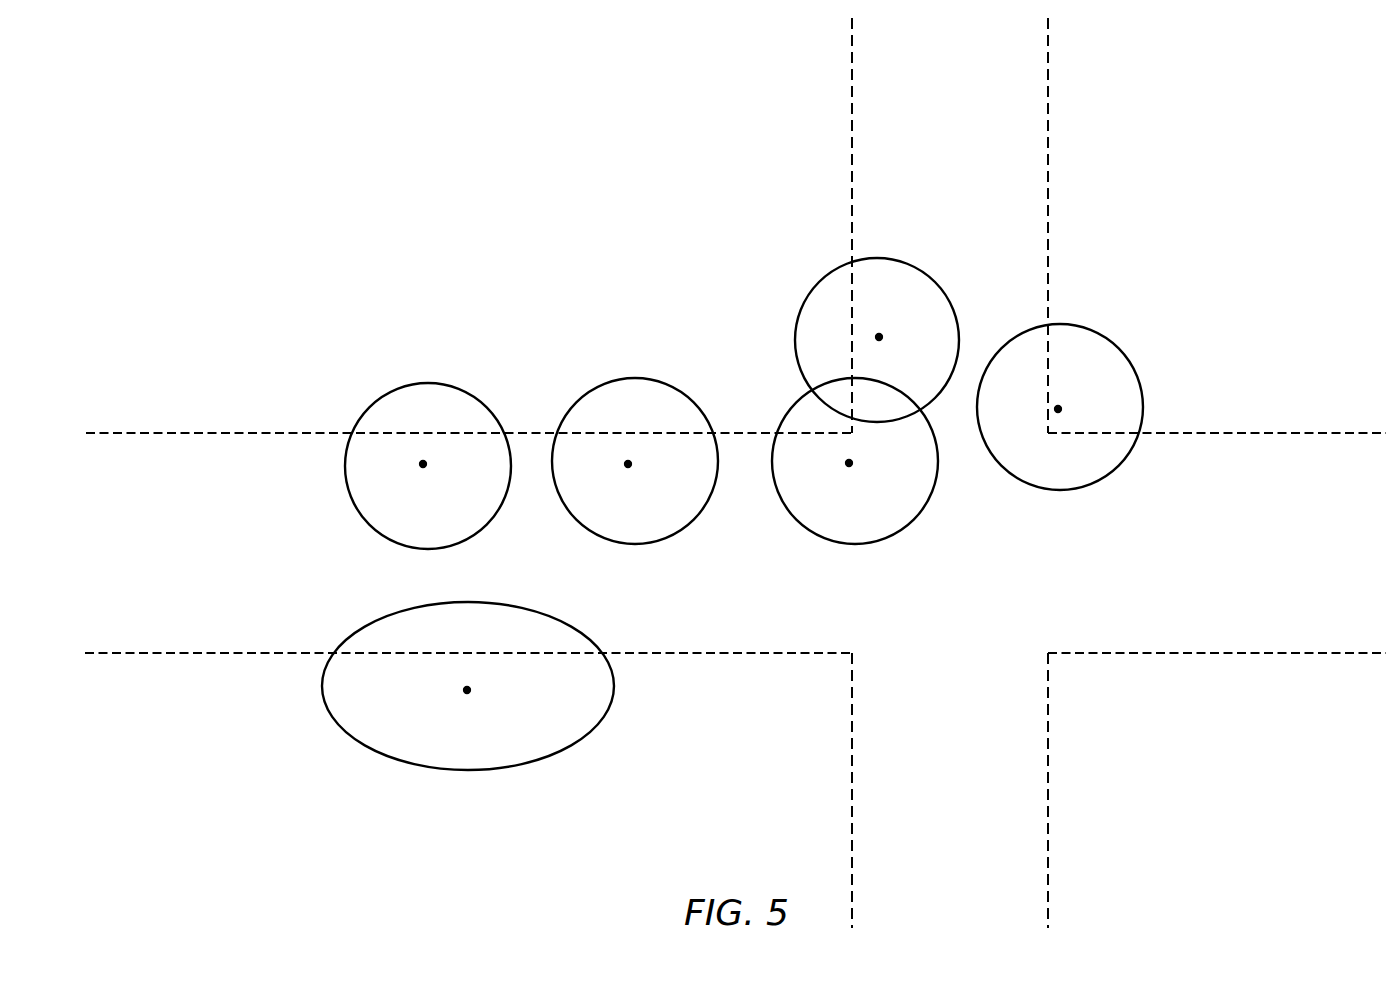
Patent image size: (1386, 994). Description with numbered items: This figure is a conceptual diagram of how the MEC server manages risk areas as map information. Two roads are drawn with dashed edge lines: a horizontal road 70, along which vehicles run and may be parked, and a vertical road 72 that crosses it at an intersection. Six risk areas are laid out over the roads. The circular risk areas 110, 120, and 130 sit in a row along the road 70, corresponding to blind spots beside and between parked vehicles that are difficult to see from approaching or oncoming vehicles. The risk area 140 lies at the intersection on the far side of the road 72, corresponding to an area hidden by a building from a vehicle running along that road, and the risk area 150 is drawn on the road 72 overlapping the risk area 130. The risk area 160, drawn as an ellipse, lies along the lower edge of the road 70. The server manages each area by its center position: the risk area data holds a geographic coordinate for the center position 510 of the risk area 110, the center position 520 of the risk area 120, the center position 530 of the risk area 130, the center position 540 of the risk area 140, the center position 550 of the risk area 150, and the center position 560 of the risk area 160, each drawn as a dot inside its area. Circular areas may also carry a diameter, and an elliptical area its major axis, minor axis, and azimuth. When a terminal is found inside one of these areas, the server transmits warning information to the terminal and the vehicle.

The road 70 is at (194, 604).
The road 72 is at (906, 222).
The risk area 110 is at (466, 395).
The risk area 120 is at (680, 390).
The risk area 130 is at (827, 542).
The risk area 140 is at (1005, 468).
The risk area 150 is at (932, 275).
The risk area 160 is at (482, 770).
The center position 510 is at (423, 464).
The center position 520 is at (628, 464).
The center position 530 is at (849, 463).
The center position 540 is at (1058, 409).
The center position 550 is at (879, 337).
The center position 560 is at (467, 690).